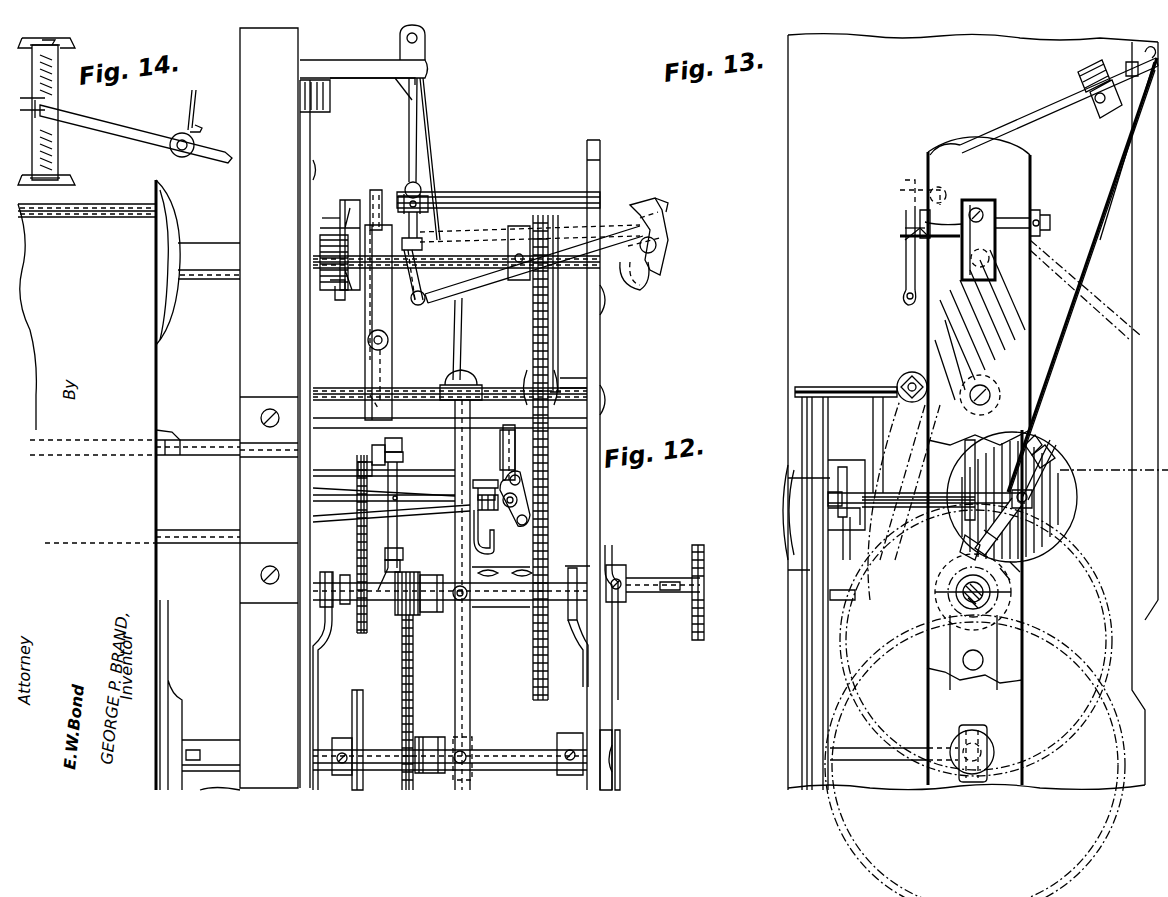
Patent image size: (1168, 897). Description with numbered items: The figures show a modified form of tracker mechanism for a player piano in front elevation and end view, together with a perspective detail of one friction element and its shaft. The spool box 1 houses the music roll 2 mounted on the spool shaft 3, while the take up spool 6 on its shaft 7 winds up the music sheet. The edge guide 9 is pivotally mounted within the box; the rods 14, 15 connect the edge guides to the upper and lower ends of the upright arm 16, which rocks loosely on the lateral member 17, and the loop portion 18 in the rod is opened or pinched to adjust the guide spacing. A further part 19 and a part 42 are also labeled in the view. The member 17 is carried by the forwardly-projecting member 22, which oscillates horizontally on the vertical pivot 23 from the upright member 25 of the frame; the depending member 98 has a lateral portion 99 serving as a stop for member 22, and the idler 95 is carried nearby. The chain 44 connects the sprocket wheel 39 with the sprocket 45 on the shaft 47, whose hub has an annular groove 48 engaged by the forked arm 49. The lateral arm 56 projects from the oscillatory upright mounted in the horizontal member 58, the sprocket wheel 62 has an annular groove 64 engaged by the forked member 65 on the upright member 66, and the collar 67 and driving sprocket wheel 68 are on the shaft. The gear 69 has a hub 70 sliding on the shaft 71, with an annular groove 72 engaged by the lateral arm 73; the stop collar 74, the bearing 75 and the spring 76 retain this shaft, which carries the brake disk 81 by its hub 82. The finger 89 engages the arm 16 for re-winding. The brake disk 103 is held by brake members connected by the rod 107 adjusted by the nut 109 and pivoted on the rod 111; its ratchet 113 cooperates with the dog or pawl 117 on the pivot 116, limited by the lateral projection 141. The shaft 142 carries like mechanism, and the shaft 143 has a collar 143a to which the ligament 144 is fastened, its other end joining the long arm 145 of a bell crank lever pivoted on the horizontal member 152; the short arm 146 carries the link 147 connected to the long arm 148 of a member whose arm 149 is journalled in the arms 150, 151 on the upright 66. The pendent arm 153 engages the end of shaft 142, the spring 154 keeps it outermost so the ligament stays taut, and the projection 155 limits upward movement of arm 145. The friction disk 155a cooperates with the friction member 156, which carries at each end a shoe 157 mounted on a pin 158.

In FIG. 12, the spool box 1 is at (240, 368).
In FIG. 12, the music roll 2 is at (170, 337).
In FIG. 12, the spool shaft 3 is at (210, 276).
In FIG. 12, the take up spool 6 is at (180, 695).
In FIG. 12, the take-up spool shaft 7 is at (205, 745).
In FIG. 12, the edge guide 9 is at (162, 430).
In FIG. 12, the rod 14 is at (412, 512).
In FIG. 13, the rod 14 is at (843, 565).
In FIG. 12, the rod 15 is at (420, 495).
In FIG. 13, the rod 15 is at (850, 480).
In FIG. 12, the upright arm 16 is at (524, 487).
In FIG. 13, the upright arm 16 is at (842, 467).
In FIG. 12, the lateral member 17 is at (522, 504).
In FIG. 13, the lateral member 17 is at (830, 500).
In FIG. 12, the loop portion 18 is at (480, 545).
In FIG. 13, the loop portion 18 is at (843, 545).
In FIG. 12, the frame member 19 is at (198, 516).
In FIG. 13, the frame member 19 is at (788, 478).
In FIG. 13, the forwardly-projecting member 22 is at (890, 490).
In FIG. 12, the vertical pivot 23 is at (512, 452).
In FIG. 13, the vertical pivot 23 is at (975, 450).
In FIG. 12, the upright member 25 is at (312, 182).
In FIG. 12, the sprocket wheel 39 is at (365, 468).
In FIG. 13, the shaft 42 is at (1028, 275).
In FIG. 12, the chain 44 is at (358, 535).
In FIG. 12, the sprocket 45 is at (375, 633).
In FIG. 12, the shaft 47 is at (502, 606).
In FIG. 13, the shaft 47 is at (955, 590).
In FIG. 12, the annular groove 48 is at (335, 572).
In FIG. 12, the forked arm 49 is at (330, 640).
In FIG. 13, the forked arm 49 is at (958, 642).
In FIG. 12, the lateral arm 56 is at (430, 612).
In FIG. 13, the lateral arm 56 is at (845, 600).
In FIG. 12, the horizontal member 58 is at (474, 388).
In FIG. 13, the horizontal member 58 is at (848, 388).
In FIG. 12, the sprocket wheel 62 is at (532, 672).
In FIG. 12, the annular groove 64 is at (568, 568).
In FIG. 12, the forked member 65 is at (585, 620).
In FIG. 12, the upright member 66 is at (600, 172).
In FIG. 13, the upright member 66 is at (982, 378).
In FIG. 12, the collar 67 is at (622, 608).
In FIG. 12, the sprocket wheel 68 is at (706, 585).
In FIG. 12, the gear 69 is at (412, 692).
In FIG. 13, the gear 69 is at (1080, 655).
In FIG. 12, the hub 70 is at (426, 737).
In FIG. 12, the shaft 71 is at (494, 756).
In FIG. 12, the annular groove 72 is at (458, 742).
In FIG. 12, the lateral arm 73 is at (472, 766).
In FIG. 13, the lateral arm 73 is at (860, 760).
In FIG. 12, the stop collar 74 is at (560, 748).
In FIG. 12, the bearing 75 is at (615, 735).
In FIG. 13, the bearing 75 is at (958, 735).
In FIG. 12, the spring 76 is at (622, 746).
In FIG. 13, the spring 76 is at (985, 735).
In FIG. 12, the brake disk 81 is at (358, 696).
In FIG. 12, the hub 82 is at (333, 740).
In FIG. 12, the finger 89 is at (527, 522).
In FIG. 13, the finger 89 is at (860, 515).
In FIG. 12, the idler 95 is at (547, 372).
In FIG. 13, the idler 95 is at (905, 368).
In FIG. 12, the depending member 98 is at (462, 456).
In FIG. 12, the lateral portion 99 is at (490, 485).
In FIG. 12, the brake disk 103 is at (370, 202).
In FIG. 12, the rod 107 is at (388, 340).
In FIG. 12, the nut 109 is at (386, 355).
In FIG. 12, the rod 111 is at (372, 393).
In FIG. 12, the ratchet 113 is at (358, 295).
In FIG. 12, the pivot 116 is at (332, 222).
In FIG. 12, the dog or pawl 117 is at (320, 218).
In FIG. 12, the lateral projection 141 is at (335, 222).
In FIG. 12, the shaft 142 is at (476, 258).
In FIG. 14, the shaft 143 is at (115, 128).
In FIG. 12, the shaft 143 is at (432, 510).
In FIG. 13, the shaft 143 is at (1040, 512).
In FIG. 14, the collar 143a is at (190, 160).
In FIG. 13, the collar 143a is at (1025, 505).
In FIG. 12, the ligament 144 is at (462, 374).
In FIG. 13, the ligament 144 is at (1060, 378).
In FIG. 12, the long arm 145 is at (420, 128).
In FIG. 13, the long arm 145 is at (1008, 110).
In FIG. 12, the short arm 146 is at (422, 210).
In FIG. 12, the link 147 is at (435, 258).
In FIG. 13, the link 147 is at (905, 272).
In FIG. 12, the long arm 148 is at (468, 290).
In FIG. 13, the long arm 148 is at (900, 282).
In FIG. 13, the arm 149 is at (905, 243).
In FIG. 13, the arm 150 is at (915, 215).
In FIG. 13, the arm 151 is at (1045, 212).
In FIG. 12, the horizontal member 152 is at (498, 194).
In FIG. 12, the pendent arm 153 is at (668, 240).
In FIG. 13, the pendent arm 153 is at (975, 205).
In FIG. 12, the spring 154 is at (636, 282).
In FIG. 13, the spring 154 is at (910, 235).
In FIG. 12, the projection 155 is at (364, 68).
In FIG. 13, the projection 155 is at (1082, 72).
In FIG. 12, the friction disk 155a is at (372, 452).
In FIG. 13, the friction disk 155a is at (1080, 490).
In FIG. 13, the friction member 156 is at (1030, 500).
In FIG. 14, the shoe 157 is at (66, 58).
In FIG. 12, the shoe 157 is at (402, 453).
In FIG. 13, the shoe 157 is at (1030, 450).
In FIG. 14, the pin 158 is at (60, 45).
In FIG. 12, the pin 158 is at (390, 441).
In FIG. 13, the pin 158 is at (1042, 452).